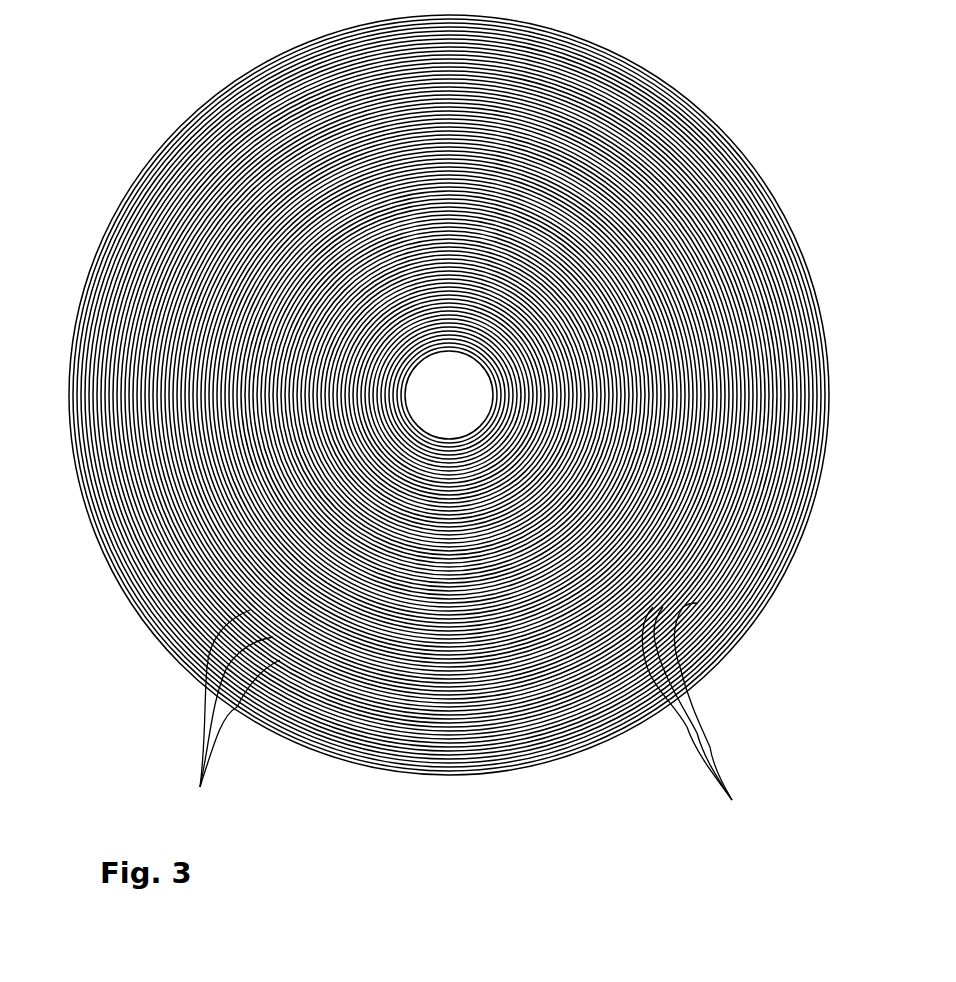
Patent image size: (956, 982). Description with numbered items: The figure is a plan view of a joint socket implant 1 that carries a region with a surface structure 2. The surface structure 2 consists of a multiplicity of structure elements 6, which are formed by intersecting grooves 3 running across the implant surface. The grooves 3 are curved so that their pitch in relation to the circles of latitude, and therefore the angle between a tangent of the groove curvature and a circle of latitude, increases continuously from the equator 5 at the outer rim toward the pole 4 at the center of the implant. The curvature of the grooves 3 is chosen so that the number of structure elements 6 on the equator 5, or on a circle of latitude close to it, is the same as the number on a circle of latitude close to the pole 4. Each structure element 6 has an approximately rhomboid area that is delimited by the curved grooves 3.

The joint socket implant 1 is at (438, 427).
The surface structure 2 is at (700, 199).
The grooves 3 is at (200, 787).
The pole 4 is at (449, 395).
The equator 5 is at (104, 562).
The structure elements 6 is at (732, 800).